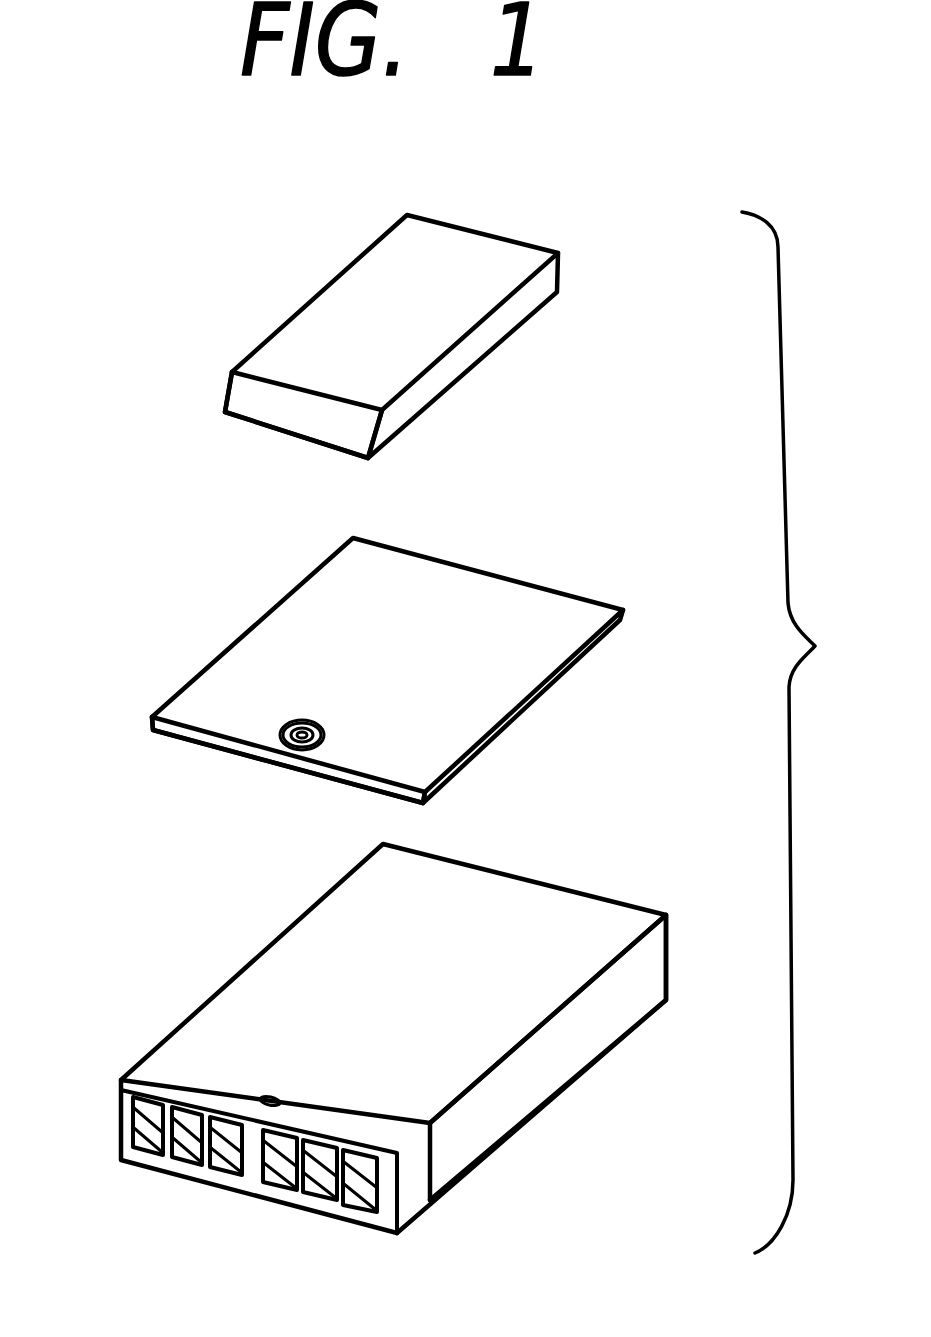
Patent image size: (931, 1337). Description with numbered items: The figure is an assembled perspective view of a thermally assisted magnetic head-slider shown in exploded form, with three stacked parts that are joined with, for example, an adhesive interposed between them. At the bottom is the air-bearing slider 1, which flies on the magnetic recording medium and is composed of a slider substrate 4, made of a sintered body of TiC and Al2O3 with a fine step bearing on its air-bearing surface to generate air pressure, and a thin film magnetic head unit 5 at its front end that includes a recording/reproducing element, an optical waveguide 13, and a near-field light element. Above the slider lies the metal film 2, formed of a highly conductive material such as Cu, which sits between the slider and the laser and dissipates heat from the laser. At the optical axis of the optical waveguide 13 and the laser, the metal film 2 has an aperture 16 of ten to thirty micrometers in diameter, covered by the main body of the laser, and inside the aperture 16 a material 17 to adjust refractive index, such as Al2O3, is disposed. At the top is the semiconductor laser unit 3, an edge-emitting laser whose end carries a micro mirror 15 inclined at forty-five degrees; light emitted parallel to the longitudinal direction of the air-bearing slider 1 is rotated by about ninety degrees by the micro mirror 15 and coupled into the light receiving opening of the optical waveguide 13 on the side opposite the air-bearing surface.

The air-bearing slider 1 is at (623, 1000).
The metal film 2 is at (548, 652).
The semiconductor laser unit 3 is at (493, 282).
The slider substrate 4 is at (587, 1070).
The thin film magnetic head unit 5 is at (410, 1203).
The optical waveguide 13 is at (262, 1100).
The micro mirror 15 is at (252, 404).
The aperture 16 is at (288, 752).
The material to adjust refractive index 17 is at (292, 760).